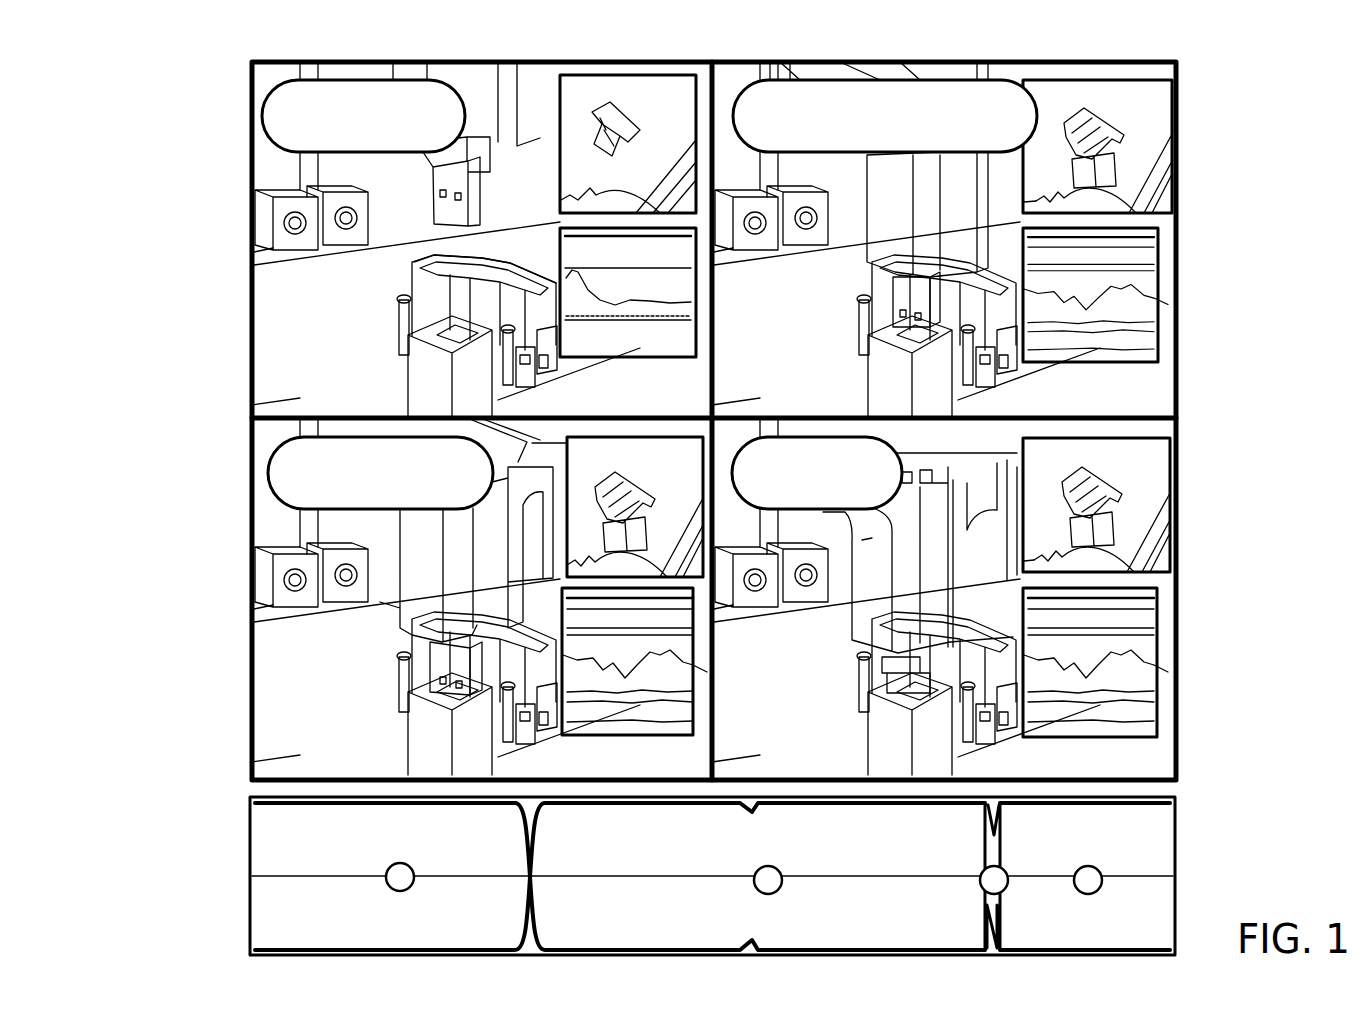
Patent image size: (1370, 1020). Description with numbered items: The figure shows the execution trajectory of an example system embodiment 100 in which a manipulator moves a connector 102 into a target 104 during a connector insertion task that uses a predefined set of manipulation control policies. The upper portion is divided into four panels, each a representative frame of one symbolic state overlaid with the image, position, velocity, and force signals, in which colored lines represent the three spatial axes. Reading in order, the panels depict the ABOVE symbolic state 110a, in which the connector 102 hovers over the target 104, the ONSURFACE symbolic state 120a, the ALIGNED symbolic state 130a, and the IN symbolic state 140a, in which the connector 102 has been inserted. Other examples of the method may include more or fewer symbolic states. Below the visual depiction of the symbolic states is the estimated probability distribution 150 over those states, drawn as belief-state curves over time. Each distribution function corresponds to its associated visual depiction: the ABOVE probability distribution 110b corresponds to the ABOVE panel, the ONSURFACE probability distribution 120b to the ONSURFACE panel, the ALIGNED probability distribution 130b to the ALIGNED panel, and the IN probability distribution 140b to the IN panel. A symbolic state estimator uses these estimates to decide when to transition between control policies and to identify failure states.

The robotic insertion task overview 100 is at (688, 501).
The connector 102 is at (448, 160).
The target 104 is at (398, 346).
The ABOVE symbolic state 110a is at (474, 240).
The ONSURFACE symbolic state 120a is at (814, 336).
The ALIGNED symbolic state 130a is at (362, 734).
The IN symbolic state 140a is at (830, 696).
The ABOVE probability distribution 110b is at (393, 864).
The ONSURFACE probability distribution 120b is at (757, 868).
The ALIGNED probability distribution 130b is at (982, 893).
The IN probability distribution 140b is at (1086, 866).
The estimated probability distribution 150 is at (625, 878).